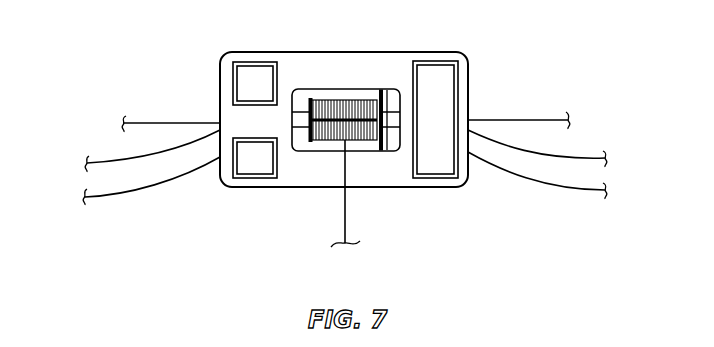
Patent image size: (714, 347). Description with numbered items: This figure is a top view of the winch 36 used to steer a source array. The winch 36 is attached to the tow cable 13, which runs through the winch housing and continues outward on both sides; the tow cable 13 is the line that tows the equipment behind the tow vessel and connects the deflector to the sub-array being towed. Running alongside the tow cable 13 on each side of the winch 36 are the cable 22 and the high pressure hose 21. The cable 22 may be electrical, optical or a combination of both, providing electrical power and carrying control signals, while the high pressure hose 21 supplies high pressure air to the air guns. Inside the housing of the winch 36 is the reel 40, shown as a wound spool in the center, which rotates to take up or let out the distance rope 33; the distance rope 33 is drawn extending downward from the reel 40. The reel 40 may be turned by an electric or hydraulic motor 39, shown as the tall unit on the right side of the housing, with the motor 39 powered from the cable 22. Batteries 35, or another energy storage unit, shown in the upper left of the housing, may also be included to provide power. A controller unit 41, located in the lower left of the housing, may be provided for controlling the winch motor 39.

The tow cable 13 is at (140, 123).
The high pressure hose 21 is at (113, 197).
The cable 22 is at (139, 162).
The distance rope 33 is at (345, 223).
The batteries 35 is at (250, 75).
The winch 36 is at (245, 188).
The motor 39 is at (448, 67).
The reel 40 is at (310, 138).
The controller unit 41 is at (254, 168).